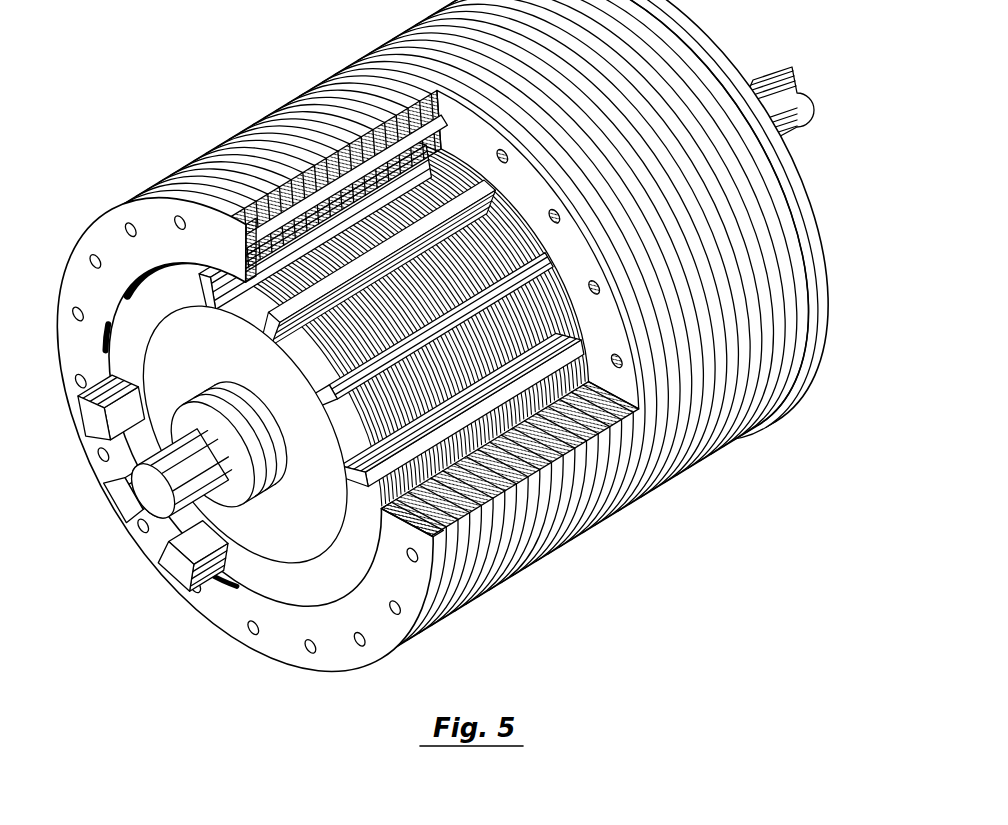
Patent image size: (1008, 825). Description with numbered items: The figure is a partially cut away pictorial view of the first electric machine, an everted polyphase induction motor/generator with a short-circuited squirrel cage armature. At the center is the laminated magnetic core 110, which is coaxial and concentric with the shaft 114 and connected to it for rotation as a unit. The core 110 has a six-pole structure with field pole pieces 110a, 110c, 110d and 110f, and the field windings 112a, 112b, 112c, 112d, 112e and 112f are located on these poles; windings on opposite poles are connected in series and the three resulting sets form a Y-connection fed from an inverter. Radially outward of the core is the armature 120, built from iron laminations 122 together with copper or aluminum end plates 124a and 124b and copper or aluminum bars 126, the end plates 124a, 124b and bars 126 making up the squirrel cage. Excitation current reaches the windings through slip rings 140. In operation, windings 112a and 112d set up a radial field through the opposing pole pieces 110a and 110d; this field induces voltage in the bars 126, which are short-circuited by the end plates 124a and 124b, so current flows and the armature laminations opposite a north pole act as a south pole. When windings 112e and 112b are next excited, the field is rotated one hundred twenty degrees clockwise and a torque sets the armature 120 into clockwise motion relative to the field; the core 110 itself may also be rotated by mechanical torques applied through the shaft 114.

The laminated magnetic core 110 is at (323, 315).
The field pole piece 110a is at (185, 608).
The field pole piece 110c is at (66, 345).
The field pole piece 110d is at (257, 209).
The field pole piece 110f is at (509, 505).
The field winding 112a is at (164, 564).
The field winding 112b is at (106, 486).
The field winding 112c is at (85, 408).
The field winding 112d is at (312, 250).
The field winding 112e is at (400, 331).
The field winding 112f is at (434, 434).
The shaft 114 is at (144, 476).
The armature 120 is at (443, 363).
The iron laminations 122 is at (326, 177).
The end plate 124a is at (243, 442).
The end plate 124b is at (632, 253).
The bars 126 is at (348, 371).
The slip rings 140 is at (229, 448).